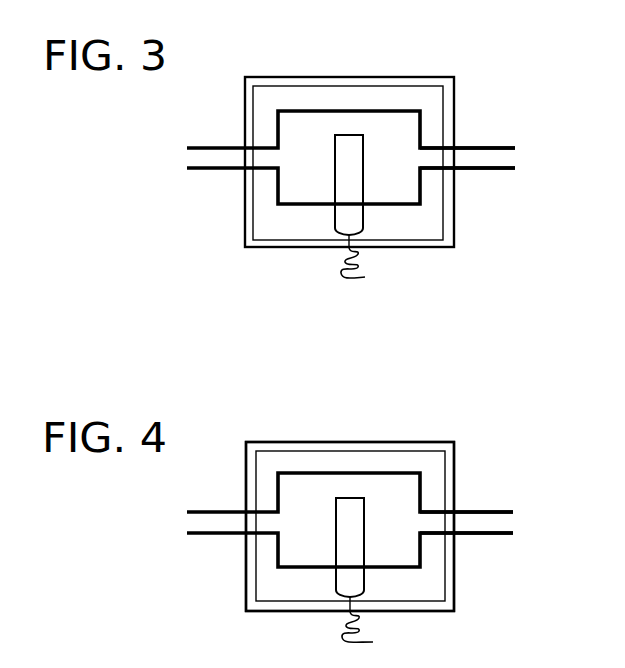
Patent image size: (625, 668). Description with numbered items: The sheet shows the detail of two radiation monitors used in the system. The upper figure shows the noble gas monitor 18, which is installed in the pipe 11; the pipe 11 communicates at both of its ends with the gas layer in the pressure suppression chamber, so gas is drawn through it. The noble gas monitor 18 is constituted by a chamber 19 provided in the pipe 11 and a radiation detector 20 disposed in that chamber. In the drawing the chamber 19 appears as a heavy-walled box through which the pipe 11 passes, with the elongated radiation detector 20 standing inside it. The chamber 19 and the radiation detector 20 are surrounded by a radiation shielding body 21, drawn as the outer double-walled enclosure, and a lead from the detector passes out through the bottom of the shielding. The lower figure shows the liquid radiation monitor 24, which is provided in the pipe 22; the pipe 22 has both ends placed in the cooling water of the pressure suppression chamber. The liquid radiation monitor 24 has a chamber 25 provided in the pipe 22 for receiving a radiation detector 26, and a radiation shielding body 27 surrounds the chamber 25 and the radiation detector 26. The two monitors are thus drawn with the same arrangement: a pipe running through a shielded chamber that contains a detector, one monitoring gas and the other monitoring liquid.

In FIG. 3, the pipe 11 is at (488, 158).
In FIG. 3, the noble gas monitor 18 is at (244, 215).
In FIG. 3, the chamber 19 is at (410, 126).
In FIG. 3, the radiation detector 20 is at (338, 156).
In FIG. 3, the radiation shielding body 21 is at (246, 118).
In FIG. 4, the pipe 22 is at (476, 519).
In FIG. 4, the liquid radiation monitor 24 is at (246, 441).
In FIG. 4, the chamber 25 is at (363, 476).
In FIG. 4, the radiation detector 26 is at (364, 533).
In FIG. 4, the radiation shielding body 27 is at (455, 445).